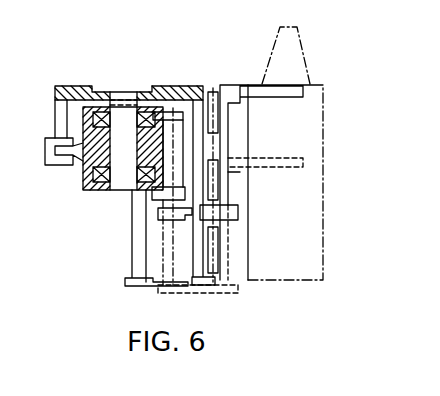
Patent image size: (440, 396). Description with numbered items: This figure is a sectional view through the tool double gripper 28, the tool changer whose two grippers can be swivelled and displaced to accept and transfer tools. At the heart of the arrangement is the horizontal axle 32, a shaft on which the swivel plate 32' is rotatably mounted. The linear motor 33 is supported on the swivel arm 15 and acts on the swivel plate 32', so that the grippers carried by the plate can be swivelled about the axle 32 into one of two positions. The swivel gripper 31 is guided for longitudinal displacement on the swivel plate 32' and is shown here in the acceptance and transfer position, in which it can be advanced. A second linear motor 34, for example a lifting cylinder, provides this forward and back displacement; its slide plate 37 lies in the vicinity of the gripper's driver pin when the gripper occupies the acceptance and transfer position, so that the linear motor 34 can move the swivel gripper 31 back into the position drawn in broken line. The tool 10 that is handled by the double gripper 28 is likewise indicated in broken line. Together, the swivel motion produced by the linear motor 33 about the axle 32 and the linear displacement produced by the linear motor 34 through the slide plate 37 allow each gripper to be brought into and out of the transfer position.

The tool 10 is at (300, 280).
The swivel arm 15 is at (85, 178).
The tool double gripper 28 is at (139, 70).
The swivel gripper 31 is at (257, 90).
The horizontal axle 32 is at (141, 189).
The swivel plate 32' is at (126, 66).
The linear motor 33 is at (45, 146).
The linear motor 34 is at (177, 110).
The slide plate 37 is at (157, 213).